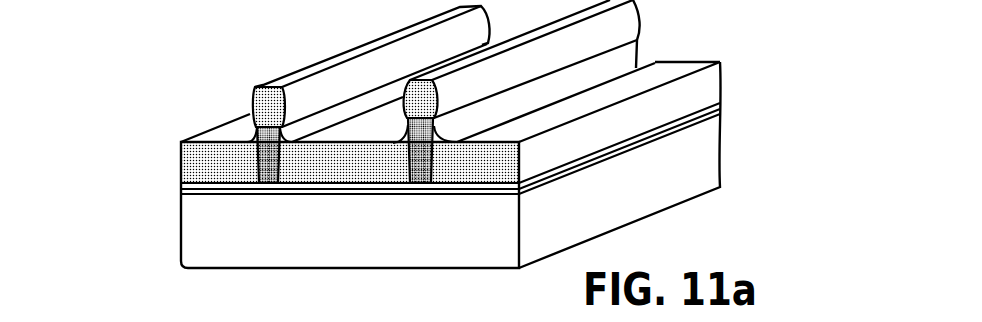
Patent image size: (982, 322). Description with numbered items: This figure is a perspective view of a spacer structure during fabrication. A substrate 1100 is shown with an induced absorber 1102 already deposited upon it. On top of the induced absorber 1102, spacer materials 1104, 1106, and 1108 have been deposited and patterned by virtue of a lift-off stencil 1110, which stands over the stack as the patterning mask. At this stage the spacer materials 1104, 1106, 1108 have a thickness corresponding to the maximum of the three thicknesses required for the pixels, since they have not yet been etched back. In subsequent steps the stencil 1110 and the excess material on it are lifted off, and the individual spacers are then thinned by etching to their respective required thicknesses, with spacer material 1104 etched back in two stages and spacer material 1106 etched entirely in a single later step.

The substrate 1100 is at (540, 207).
The induced absorber 1102 is at (636, 140).
The spacer material 1104 is at (660, 110).
The spacer material 1106 is at (345, 178).
The spacer material 1108 is at (233, 167).
The lift-off stencil 1110 is at (255, 131).